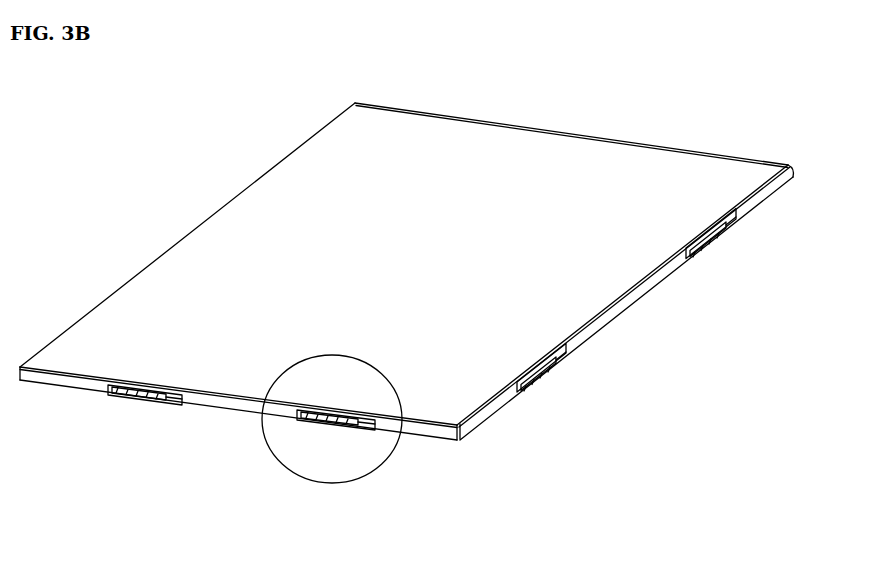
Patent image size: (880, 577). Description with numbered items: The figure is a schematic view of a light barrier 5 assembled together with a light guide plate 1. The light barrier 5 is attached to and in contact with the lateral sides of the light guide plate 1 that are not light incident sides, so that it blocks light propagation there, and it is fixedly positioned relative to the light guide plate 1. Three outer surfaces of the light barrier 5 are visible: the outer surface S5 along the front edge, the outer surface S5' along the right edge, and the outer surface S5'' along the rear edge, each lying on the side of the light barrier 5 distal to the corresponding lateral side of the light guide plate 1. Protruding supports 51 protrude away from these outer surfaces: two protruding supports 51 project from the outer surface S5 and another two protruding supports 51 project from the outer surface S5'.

The light guide plate 1 is at (409, 317).
The light barrier 5 is at (627, 302).
The protruding support 51 is at (567, 365).
The outer surface S5 is at (240, 450).
The outer surface S5' is at (627, 302).
The outer surface S5'' is at (574, 139).